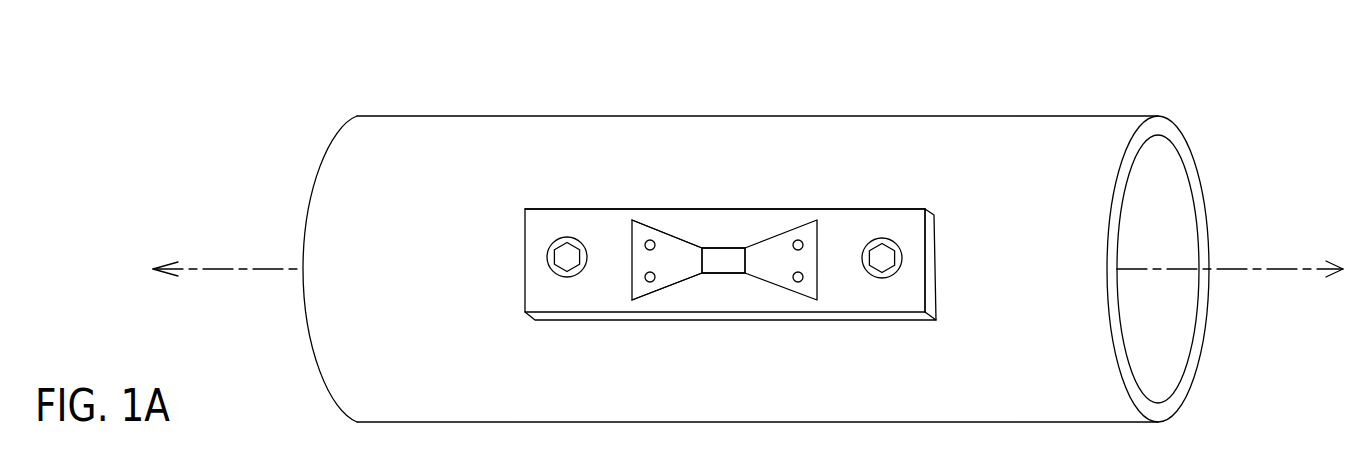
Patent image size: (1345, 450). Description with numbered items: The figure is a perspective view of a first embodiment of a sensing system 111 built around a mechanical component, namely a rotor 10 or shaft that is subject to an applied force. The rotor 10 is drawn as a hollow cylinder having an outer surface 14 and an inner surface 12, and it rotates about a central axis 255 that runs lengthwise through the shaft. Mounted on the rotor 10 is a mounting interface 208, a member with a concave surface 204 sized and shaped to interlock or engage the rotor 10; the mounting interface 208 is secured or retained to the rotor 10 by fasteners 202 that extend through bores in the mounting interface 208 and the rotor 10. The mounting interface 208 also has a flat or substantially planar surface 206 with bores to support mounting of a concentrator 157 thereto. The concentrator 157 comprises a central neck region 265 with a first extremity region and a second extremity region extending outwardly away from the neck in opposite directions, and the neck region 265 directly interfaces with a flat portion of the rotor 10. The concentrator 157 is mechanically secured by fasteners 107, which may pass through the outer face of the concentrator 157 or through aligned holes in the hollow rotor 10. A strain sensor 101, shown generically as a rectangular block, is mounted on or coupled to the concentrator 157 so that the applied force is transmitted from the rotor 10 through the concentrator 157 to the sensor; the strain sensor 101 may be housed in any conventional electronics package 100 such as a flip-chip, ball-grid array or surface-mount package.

The rotor 10 is at (870, 145).
The inner surface 12 is at (1157, 330).
The outer surface 14 is at (1032, 233).
The electronics package 100 is at (727, 250).
The strain sensor 101 is at (658, 188).
The fasteners 107 is at (806, 277).
The sensing system 111 is at (672, 77).
The concentrator 157 is at (676, 250).
The fasteners 202 is at (560, 252).
The concave surface 204 is at (935, 263).
The planar surface 206 is at (550, 290).
The mounting interface 208 is at (583, 222).
The central axis 255 is at (222, 267).
The neck region 265 is at (720, 273).